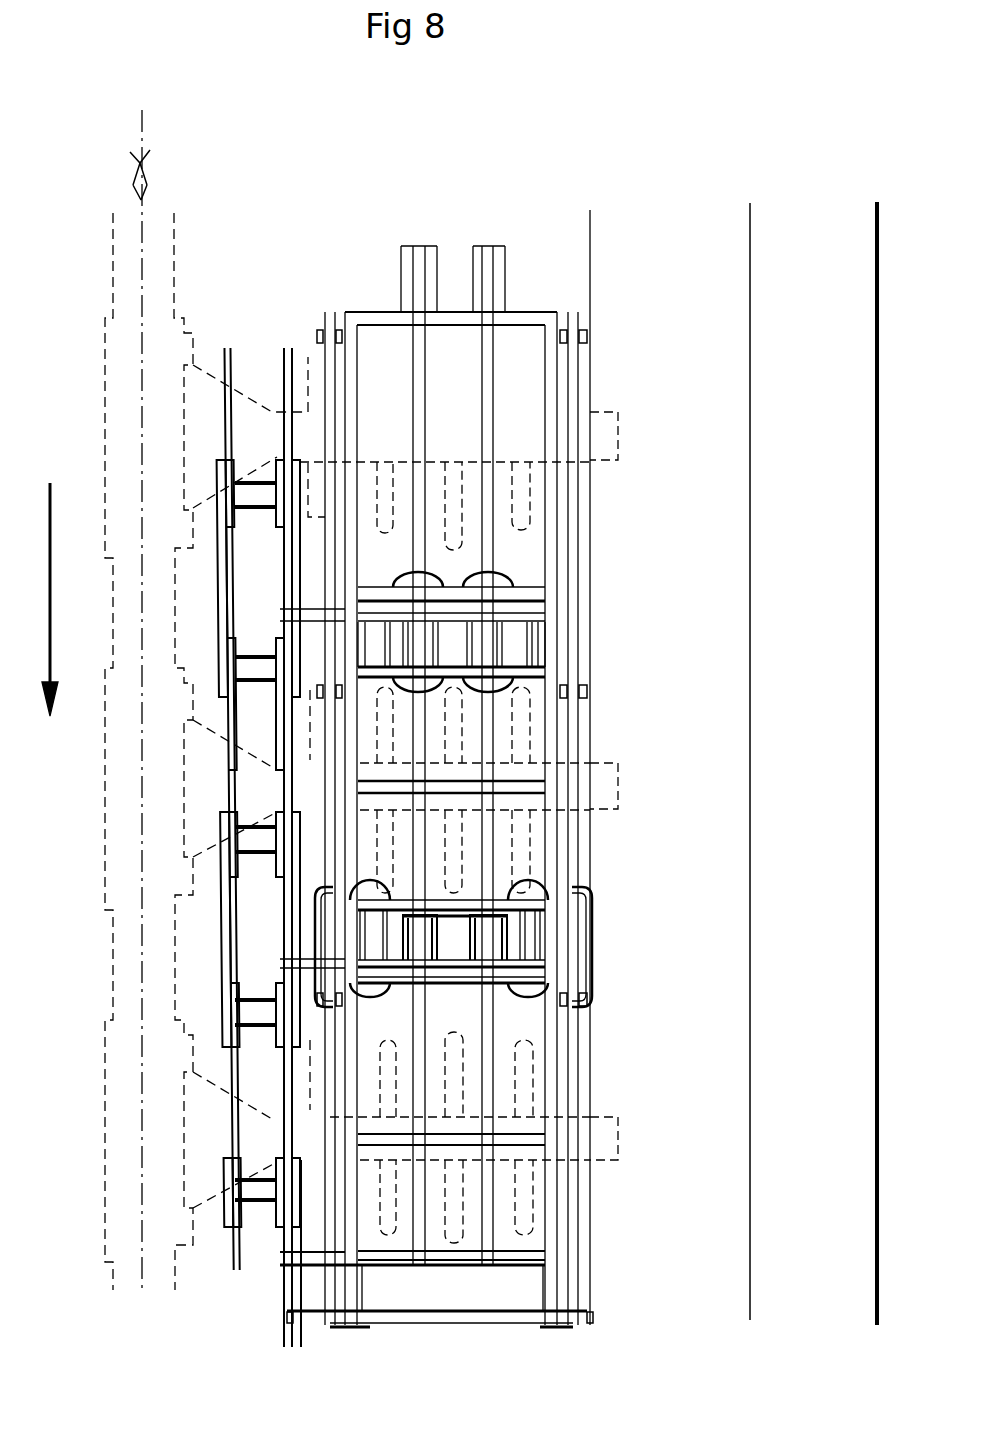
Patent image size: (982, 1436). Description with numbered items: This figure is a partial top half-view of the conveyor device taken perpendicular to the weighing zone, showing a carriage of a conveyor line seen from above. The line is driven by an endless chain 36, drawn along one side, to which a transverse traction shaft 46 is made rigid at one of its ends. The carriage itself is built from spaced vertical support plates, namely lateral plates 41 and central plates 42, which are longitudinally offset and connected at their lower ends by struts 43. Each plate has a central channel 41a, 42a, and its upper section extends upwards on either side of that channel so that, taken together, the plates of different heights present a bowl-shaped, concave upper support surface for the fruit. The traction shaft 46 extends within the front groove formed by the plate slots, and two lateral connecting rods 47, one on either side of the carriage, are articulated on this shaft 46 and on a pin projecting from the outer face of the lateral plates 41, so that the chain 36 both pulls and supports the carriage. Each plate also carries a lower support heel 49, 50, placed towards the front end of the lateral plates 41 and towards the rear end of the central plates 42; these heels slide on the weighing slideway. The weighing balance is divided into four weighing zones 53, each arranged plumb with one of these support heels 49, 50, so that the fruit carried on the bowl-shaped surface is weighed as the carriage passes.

The endless chain 36 is at (225, 1255).
The lateral support plate 41 is at (553, 733).
The central channel 41a is at (612, 782).
The central support plate 42 is at (487, 865).
The central channel 42a is at (487, 757).
The strut 43 is at (508, 788).
The transverse traction shaft 46 is at (487, 1315).
The lateral connecting rod 47 is at (595, 1012).
The lower support heel 49 is at (330, 940).
The lower support heel 50 is at (503, 637).
The weighing zone 53 is at (510, 577).